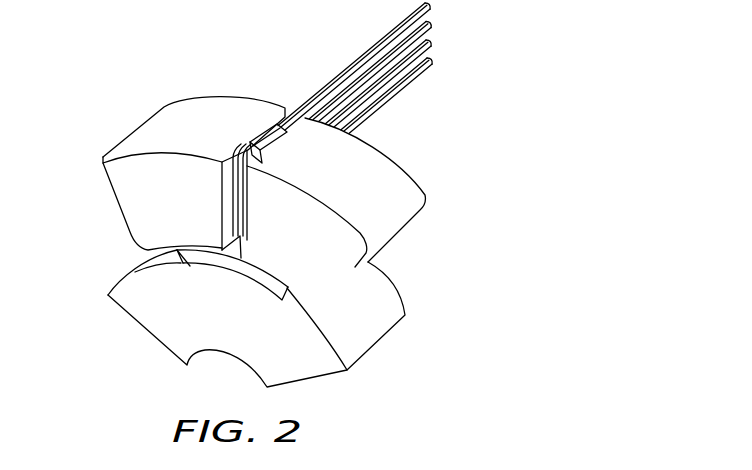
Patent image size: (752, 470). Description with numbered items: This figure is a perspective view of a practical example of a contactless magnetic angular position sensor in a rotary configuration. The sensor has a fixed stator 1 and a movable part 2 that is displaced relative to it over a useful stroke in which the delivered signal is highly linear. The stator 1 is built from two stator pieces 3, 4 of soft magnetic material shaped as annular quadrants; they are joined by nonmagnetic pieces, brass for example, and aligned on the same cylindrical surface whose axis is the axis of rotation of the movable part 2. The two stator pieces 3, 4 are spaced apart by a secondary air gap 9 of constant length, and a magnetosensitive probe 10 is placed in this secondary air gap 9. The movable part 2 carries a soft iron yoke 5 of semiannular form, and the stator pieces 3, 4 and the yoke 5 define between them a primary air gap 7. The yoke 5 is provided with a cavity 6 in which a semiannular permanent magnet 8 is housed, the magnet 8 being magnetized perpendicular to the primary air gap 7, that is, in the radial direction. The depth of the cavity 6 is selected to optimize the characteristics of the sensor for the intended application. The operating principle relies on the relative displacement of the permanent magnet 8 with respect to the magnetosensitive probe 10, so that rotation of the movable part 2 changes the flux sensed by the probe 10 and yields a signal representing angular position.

The fixed stator 1 is at (310, 135).
The movable part 2 is at (292, 326).
The stator piece 3 is at (190, 110).
The stator piece 4 is at (400, 178).
The soft iron yoke 5 is at (317, 363).
The cavity 6 is at (203, 272).
The primary air gap 7 is at (153, 258).
The permanent magnet 8 is at (182, 266).
The secondary air gap 9 is at (232, 266).
The magnetosensitive probe 10 is at (250, 145).